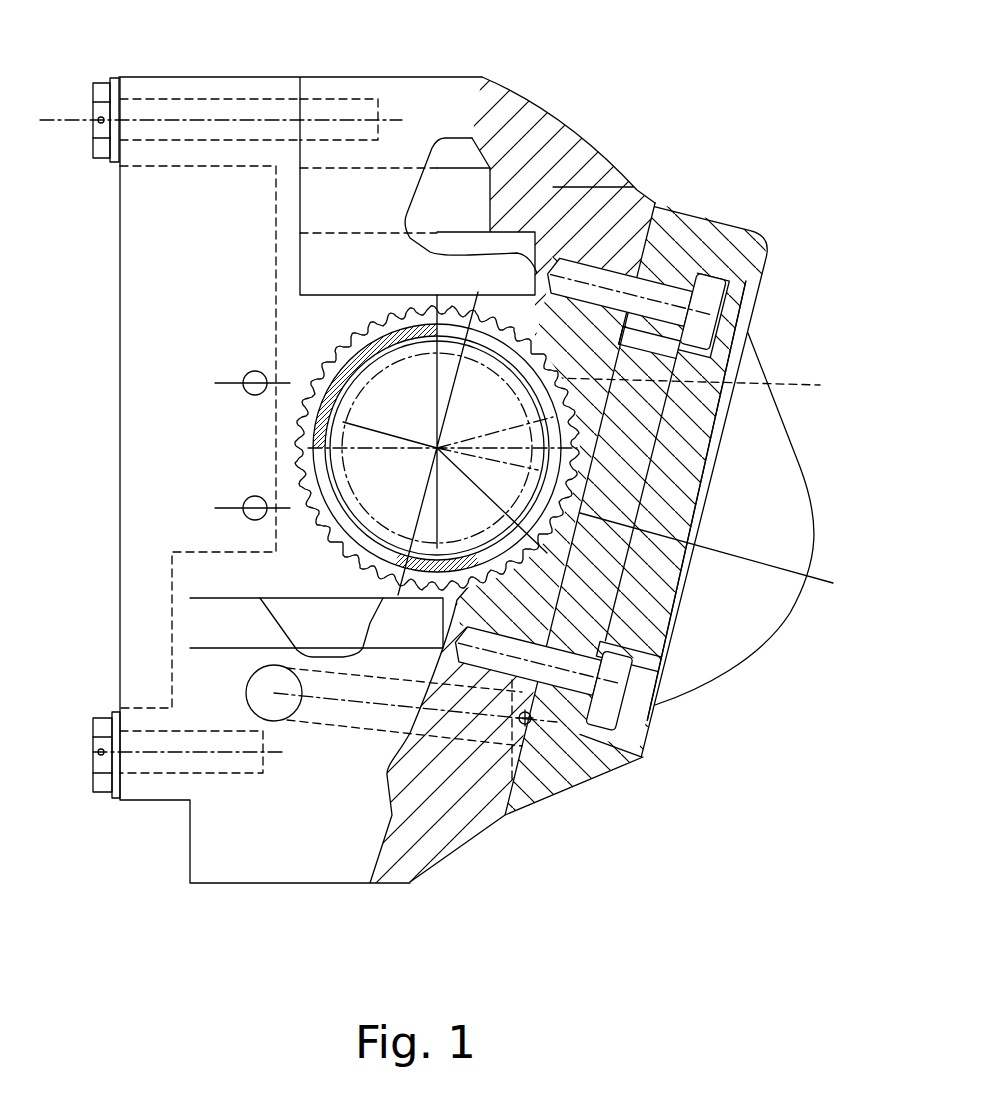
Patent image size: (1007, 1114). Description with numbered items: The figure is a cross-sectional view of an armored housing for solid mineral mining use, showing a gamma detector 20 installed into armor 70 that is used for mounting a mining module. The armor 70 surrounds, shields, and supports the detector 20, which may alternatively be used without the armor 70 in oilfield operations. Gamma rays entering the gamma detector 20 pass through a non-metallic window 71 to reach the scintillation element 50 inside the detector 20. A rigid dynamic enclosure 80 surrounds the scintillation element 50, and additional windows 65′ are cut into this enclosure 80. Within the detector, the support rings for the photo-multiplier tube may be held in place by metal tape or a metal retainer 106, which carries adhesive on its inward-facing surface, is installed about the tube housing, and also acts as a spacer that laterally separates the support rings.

The gamma detector 20 is at (290, 487).
The scintillation element 50 is at (412, 409).
The pin 65′ is at (543, 390).
The armor 70 is at (650, 187).
The non-metallic window 71 is at (670, 488).
The rigid dynamic enclosure 80 is at (358, 338).
The metal tape or retainer 106 is at (400, 327).